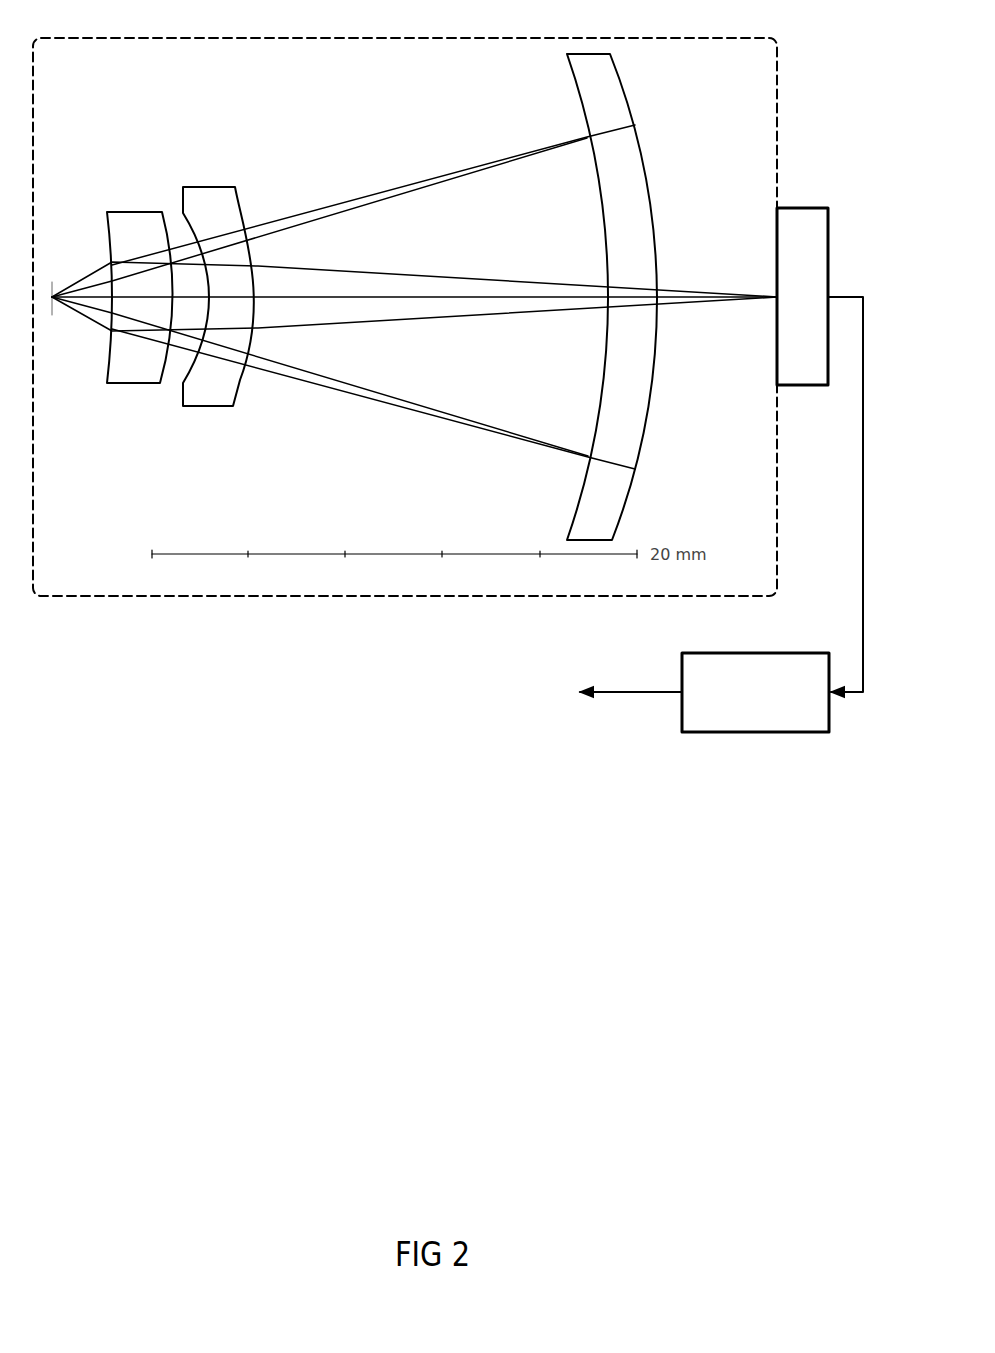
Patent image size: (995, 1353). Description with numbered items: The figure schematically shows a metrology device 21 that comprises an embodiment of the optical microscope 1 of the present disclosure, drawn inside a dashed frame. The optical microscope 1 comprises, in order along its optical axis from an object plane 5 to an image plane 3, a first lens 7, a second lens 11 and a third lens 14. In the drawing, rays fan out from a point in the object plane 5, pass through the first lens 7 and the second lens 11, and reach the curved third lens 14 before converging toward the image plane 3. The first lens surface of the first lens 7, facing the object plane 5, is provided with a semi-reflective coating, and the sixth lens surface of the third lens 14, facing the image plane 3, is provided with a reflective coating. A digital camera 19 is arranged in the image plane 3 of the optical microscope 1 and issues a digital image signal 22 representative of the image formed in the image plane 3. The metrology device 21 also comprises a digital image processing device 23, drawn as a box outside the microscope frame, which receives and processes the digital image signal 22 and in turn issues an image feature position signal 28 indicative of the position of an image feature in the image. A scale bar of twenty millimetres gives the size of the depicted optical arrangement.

The optical microscope 1 is at (123, 100).
The image plane 3 is at (783, 266).
The object plane 5 is at (56, 283).
The first lens 7 is at (132, 370).
The second lens 11 is at (218, 394).
The third lens 14 is at (598, 483).
The digital camera 19 is at (815, 309).
The metrology device 21 is at (405, 384).
The digital image signal 22 is at (845, 478).
The digital image processing device 23 is at (771, 706).
The image feature position signal 28 is at (631, 675).